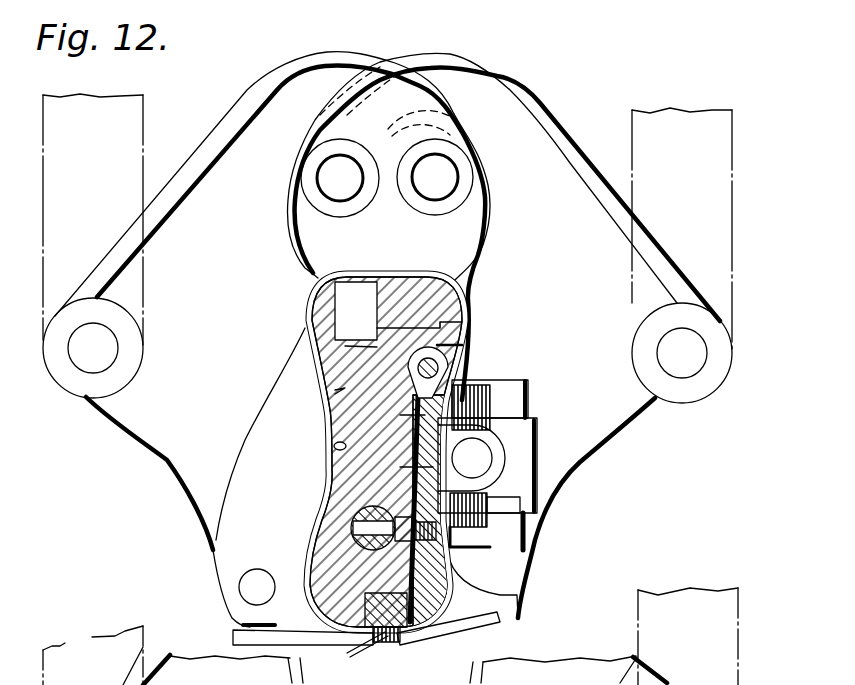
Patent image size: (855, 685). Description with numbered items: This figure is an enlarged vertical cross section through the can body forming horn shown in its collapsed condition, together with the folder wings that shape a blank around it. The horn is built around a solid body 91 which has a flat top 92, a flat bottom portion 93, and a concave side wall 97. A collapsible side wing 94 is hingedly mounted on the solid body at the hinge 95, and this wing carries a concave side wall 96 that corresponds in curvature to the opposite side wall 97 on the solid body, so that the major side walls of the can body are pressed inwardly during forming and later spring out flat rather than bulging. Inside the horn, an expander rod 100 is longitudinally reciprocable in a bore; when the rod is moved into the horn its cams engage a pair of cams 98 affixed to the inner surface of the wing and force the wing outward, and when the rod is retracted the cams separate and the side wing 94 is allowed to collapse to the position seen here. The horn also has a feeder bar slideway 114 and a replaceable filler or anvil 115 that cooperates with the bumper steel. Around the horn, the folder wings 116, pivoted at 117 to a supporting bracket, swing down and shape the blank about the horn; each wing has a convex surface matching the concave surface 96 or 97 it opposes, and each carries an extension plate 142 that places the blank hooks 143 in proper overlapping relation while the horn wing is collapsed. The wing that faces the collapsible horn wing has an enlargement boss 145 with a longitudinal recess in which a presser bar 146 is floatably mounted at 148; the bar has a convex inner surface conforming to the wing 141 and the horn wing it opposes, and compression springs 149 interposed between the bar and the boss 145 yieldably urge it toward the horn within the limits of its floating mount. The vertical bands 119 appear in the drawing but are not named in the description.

The solid body 91 is at (335, 390).
The flat top 92 is at (397, 290).
The flat bottom portion 93 is at (310, 590).
The collapsible side wing 94 is at (400, 467).
The hinge mounting 95 is at (333, 370).
The concave side wall 96 is at (400, 415).
The side wall 97 is at (334, 444).
The cams 98 is at (440, 587).
The expander rod 100 is at (357, 518).
The feeder bar slideway 114 is at (345, 346).
The replaceable filler or anvil 115 is at (363, 588).
The folder wings 116 is at (165, 435).
The pivot 117 is at (335, 180).
The band 119 is at (80, 638).
The wing 141 is at (327, 488).
The extension plate 142 is at (236, 632).
The blank hooks 143 is at (380, 643).
The enlargement boss 145 is at (515, 378).
The presser bar 146 is at (460, 467).
The floatable mounting 148 is at (513, 430).
The compression springs 149 is at (518, 402).